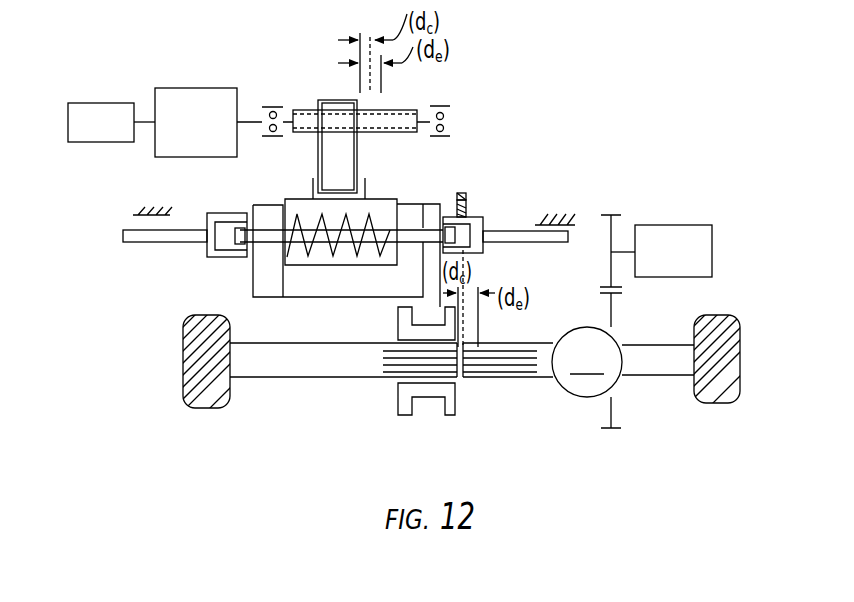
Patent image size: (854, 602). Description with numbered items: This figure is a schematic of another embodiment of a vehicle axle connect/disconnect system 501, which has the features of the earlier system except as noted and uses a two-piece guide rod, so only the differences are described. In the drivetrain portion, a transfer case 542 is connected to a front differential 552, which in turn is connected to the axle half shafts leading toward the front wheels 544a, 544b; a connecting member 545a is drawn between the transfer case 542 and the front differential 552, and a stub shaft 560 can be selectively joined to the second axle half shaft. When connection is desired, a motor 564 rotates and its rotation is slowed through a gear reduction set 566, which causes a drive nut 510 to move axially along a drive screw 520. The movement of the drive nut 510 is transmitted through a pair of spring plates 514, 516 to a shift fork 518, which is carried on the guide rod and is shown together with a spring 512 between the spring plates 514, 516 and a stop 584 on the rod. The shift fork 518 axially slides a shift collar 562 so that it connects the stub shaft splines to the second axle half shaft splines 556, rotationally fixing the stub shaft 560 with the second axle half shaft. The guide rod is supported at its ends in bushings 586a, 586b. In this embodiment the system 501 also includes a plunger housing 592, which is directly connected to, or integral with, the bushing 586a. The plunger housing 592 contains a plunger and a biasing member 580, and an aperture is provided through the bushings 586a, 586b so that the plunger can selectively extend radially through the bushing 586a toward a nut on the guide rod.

The connect/disconnect system 501 is at (622, 66).
The drive nut 510 is at (325, 100).
The spring 512 is at (308, 248).
The spring plate 514 is at (290, 199).
The spring plate 516 is at (367, 205).
The shift fork 518 is at (322, 298).
The drive screw 520 is at (385, 110).
The transfer case 542 is at (712, 252).
The front wheel 544a is at (722, 405).
The front wheel 544b is at (200, 408).
The drive link 545a is at (640, 377).
The front differential 552 is at (587, 362).
The second axle half shaft splines 556 is at (518, 375).
The stub shaft 560 is at (287, 378).
The shift collar 562 is at (398, 393).
The motor 564 is at (101, 103).
The gear reduction set 566 is at (197, 88).
The biasing member 580 is at (467, 207).
The stop 584 is at (418, 203).
The bushing 586a is at (483, 248).
The bushing 586b is at (223, 213).
The plunger housing 592 is at (466, 193).